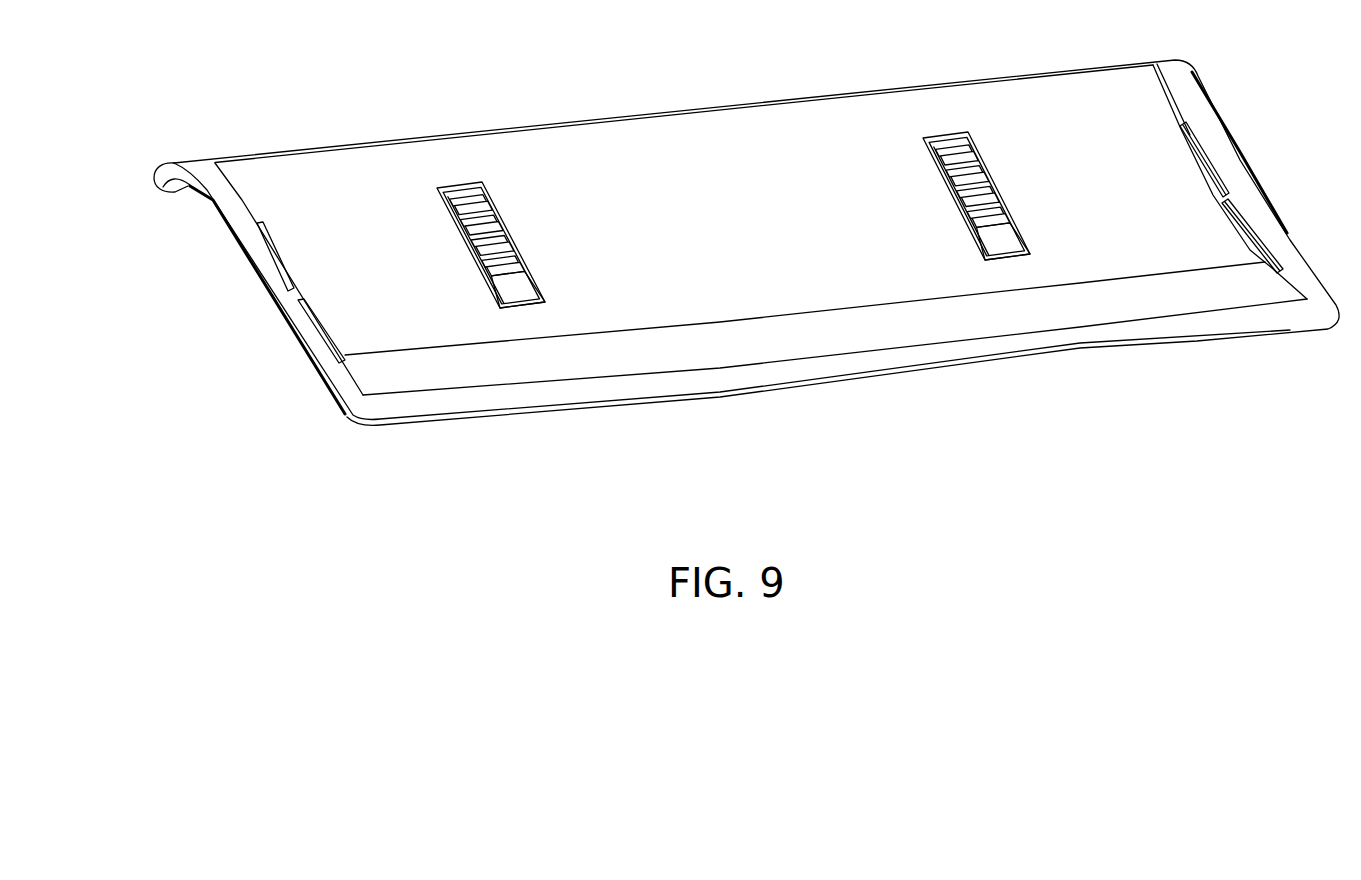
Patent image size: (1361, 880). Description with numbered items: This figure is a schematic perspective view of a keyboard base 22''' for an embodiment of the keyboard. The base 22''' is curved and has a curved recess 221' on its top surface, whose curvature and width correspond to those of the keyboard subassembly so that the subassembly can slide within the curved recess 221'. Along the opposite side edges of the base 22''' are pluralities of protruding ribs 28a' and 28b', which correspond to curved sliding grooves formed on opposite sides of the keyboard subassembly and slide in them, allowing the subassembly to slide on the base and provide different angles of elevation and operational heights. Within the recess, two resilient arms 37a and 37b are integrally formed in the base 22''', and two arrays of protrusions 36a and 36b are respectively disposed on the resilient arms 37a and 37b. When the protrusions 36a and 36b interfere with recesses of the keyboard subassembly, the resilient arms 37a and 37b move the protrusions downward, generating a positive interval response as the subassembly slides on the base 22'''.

The base 22''' is at (746, 242).
The curved recess 221' is at (761, 175).
The protruding ribs 28a' is at (1267, 190).
The protruding ribs 28b' is at (244, 304).
The array of protrusions 36a is at (963, 221).
The array of protrusions 36b is at (478, 268).
The resilient arm 37a is at (1003, 243).
The resilient arm 37b is at (515, 290).